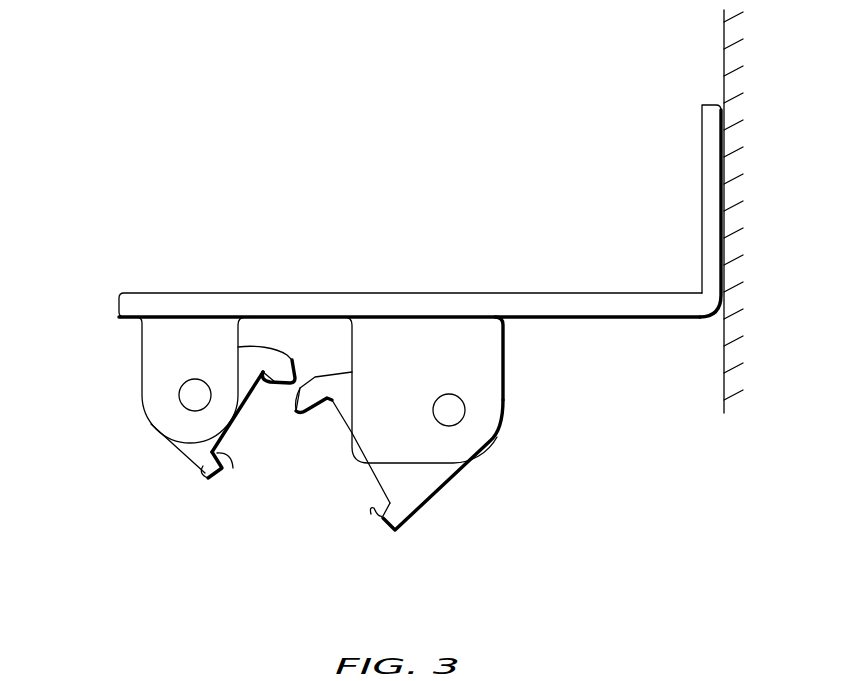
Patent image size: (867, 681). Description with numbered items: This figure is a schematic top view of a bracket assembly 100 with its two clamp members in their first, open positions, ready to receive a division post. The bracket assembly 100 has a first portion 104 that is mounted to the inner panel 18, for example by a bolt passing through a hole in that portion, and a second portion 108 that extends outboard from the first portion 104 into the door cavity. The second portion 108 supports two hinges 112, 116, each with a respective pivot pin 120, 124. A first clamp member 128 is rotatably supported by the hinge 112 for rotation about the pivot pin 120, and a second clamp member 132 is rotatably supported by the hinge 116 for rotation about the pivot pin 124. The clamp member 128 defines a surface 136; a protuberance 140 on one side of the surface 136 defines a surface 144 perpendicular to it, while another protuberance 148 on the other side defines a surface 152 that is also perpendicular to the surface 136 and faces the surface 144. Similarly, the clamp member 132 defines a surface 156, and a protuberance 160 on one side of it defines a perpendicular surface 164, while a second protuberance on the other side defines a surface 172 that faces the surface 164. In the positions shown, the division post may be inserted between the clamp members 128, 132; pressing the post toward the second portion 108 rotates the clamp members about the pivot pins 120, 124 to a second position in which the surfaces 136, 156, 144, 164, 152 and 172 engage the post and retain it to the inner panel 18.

The inner panel 18 is at (724, 62).
The bracket assembly 100 is at (173, 222).
The first portion 104 is at (702, 197).
The second portion 108 is at (302, 298).
The first hinge 112 is at (154, 355).
The second hinge 116 is at (480, 365).
The first pivot pin 120 is at (193, 396).
The second pivot pin 124 is at (450, 412).
The first clamp member 128 is at (186, 468).
The second clamp member 132 is at (428, 492).
The surface of first clamp member 136 is at (218, 443).
The protuberance 140 is at (286, 364).
The surface of protuberance 144 is at (287, 381).
The protuberance 148 is at (200, 480).
The surface of protuberance 152 is at (233, 468).
The surface of second clamp member 156 is at (347, 437).
The protuberance 160 is at (320, 372).
The surface of protuberance 164 is at (312, 417).
The surface of protuberance 172 is at (371, 514).